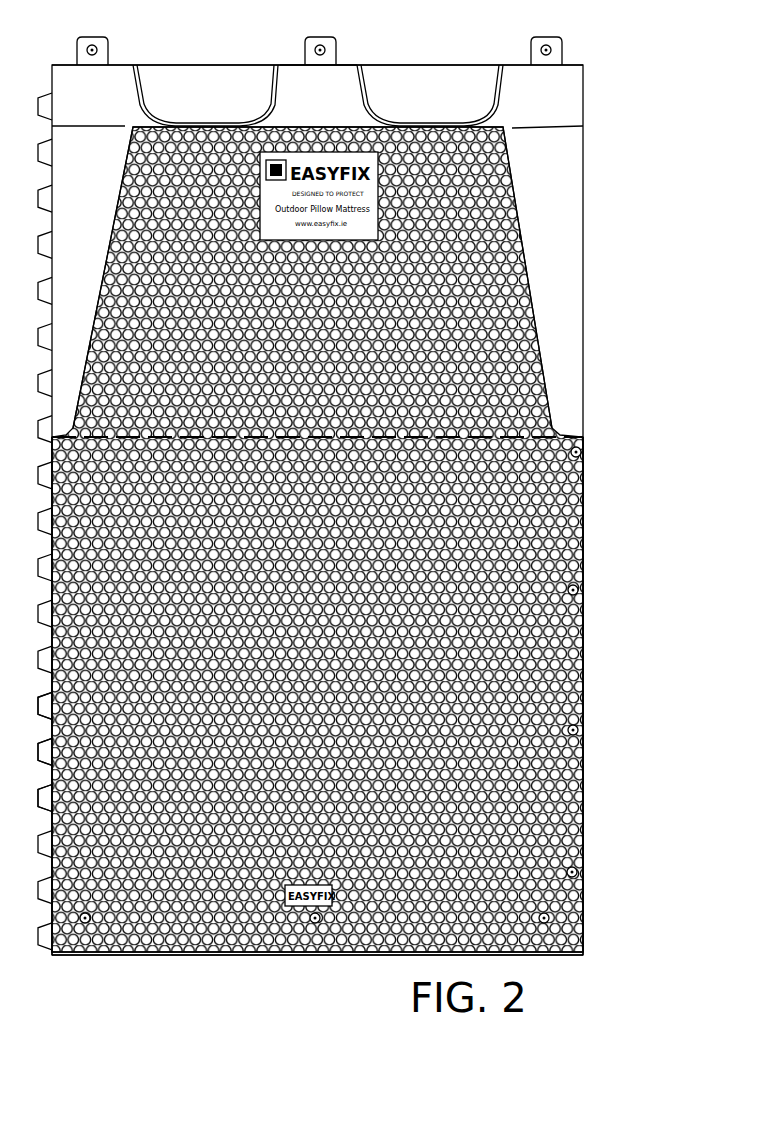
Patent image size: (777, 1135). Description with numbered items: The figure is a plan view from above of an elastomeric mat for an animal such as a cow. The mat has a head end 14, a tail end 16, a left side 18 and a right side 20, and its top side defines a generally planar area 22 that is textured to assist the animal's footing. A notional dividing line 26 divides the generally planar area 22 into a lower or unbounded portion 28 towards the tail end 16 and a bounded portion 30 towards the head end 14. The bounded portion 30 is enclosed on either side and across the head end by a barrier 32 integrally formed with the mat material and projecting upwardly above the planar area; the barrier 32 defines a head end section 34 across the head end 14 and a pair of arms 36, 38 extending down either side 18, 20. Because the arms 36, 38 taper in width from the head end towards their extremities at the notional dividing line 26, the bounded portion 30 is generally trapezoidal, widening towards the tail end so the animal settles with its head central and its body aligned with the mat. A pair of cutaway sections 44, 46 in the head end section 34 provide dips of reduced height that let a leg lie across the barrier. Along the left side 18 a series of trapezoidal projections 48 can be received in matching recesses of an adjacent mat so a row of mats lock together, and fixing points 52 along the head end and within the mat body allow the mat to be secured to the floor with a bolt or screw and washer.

The head end 14 is at (208, 64).
The tail end 16 is at (190, 960).
The left side 18 is at (50, 592).
The right side 20 is at (583, 612).
The generally planar area 22 is at (285, 316).
The notional dividing line 26 is at (540, 435).
The unbounded portion 28 is at (553, 550).
The bounded portion 30 is at (505, 305).
The barrier 32 is at (580, 97).
The head end section 34 is at (342, 75).
The arm 36 is at (65, 243).
The arm 38 is at (565, 220).
The cutaway section 44 is at (236, 85).
The cutaway section 46 is at (435, 82).
The trapezoidal projections 48 is at (37, 712).
The fixing points 52 is at (100, 22).